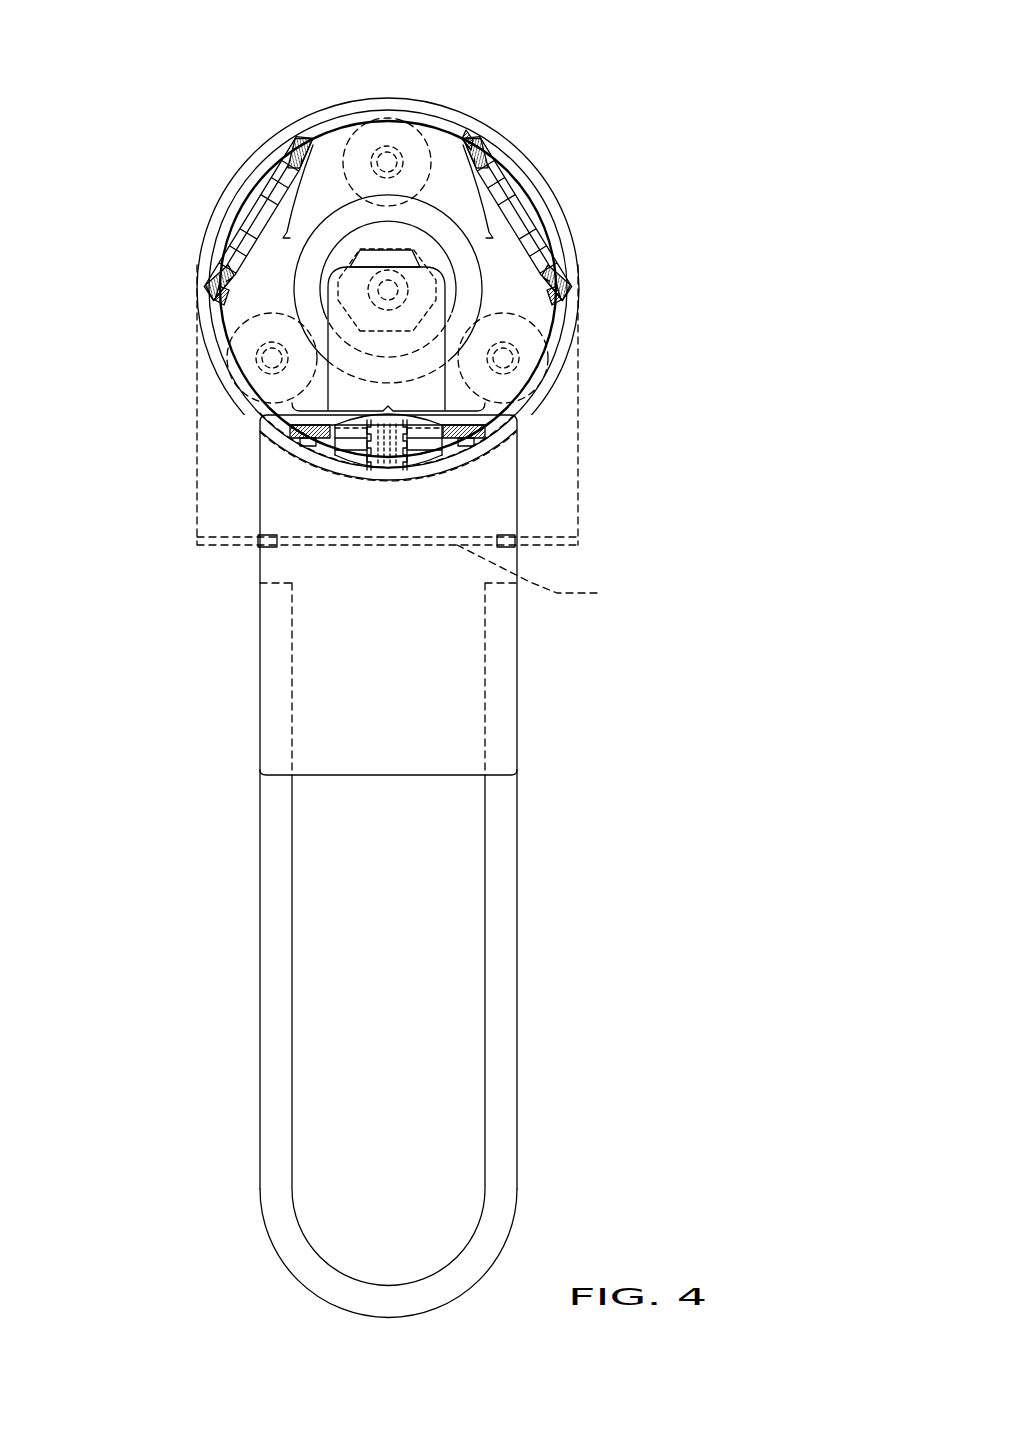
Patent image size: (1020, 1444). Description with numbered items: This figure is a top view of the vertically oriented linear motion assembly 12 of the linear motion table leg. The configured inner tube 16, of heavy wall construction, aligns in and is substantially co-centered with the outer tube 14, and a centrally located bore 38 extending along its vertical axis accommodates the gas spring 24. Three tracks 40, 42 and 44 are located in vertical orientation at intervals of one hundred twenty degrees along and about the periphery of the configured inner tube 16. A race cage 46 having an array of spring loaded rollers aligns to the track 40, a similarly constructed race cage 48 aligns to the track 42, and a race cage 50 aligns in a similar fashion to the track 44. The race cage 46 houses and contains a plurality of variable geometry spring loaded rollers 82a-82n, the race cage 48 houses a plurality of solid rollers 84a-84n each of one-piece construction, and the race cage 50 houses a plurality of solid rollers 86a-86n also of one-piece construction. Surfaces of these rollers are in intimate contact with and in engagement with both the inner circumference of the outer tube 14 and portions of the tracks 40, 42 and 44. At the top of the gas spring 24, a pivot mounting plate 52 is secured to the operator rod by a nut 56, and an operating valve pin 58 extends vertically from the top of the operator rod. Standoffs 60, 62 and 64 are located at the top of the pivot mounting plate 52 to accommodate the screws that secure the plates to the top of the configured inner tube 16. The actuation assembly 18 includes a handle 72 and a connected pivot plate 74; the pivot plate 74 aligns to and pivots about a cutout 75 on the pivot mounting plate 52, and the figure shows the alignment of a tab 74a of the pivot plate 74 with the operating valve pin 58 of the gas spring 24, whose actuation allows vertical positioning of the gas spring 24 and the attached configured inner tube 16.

The linear motion assembly 12 is at (728, 118).
The outer tube 14 is at (298, 110).
The configured inner tube 16 is at (331, 118).
The actuation assembly 18 is at (522, 752).
The gas spring 24 is at (457, 298).
The bore 38 is at (335, 228).
The track 40 is at (388, 330).
The track 42 is at (302, 202).
The track 44 is at (473, 202).
The race cage 46 is at (480, 440).
The race cage 48 is at (211, 300).
The race cage 50 is at (467, 120).
The pivot mounting plate 52 is at (588, 547).
The nut 56 is at (418, 255).
The operating valve pin 58 is at (560, 272).
The standoff 60 is at (268, 392).
The standoff 62 is at (428, 135).
The standoff 64 is at (540, 351).
The handle 72 is at (505, 842).
The pivot plate 74 is at (445, 760).
The tab 74a is at (330, 283).
The cutout 75 is at (544, 574).
The variable geometry spring loaded rollers 82a-82n is at (353, 458).
The solid rollers 84a-84n is at (272, 182).
The solid rollers 86a-86n is at (518, 210).